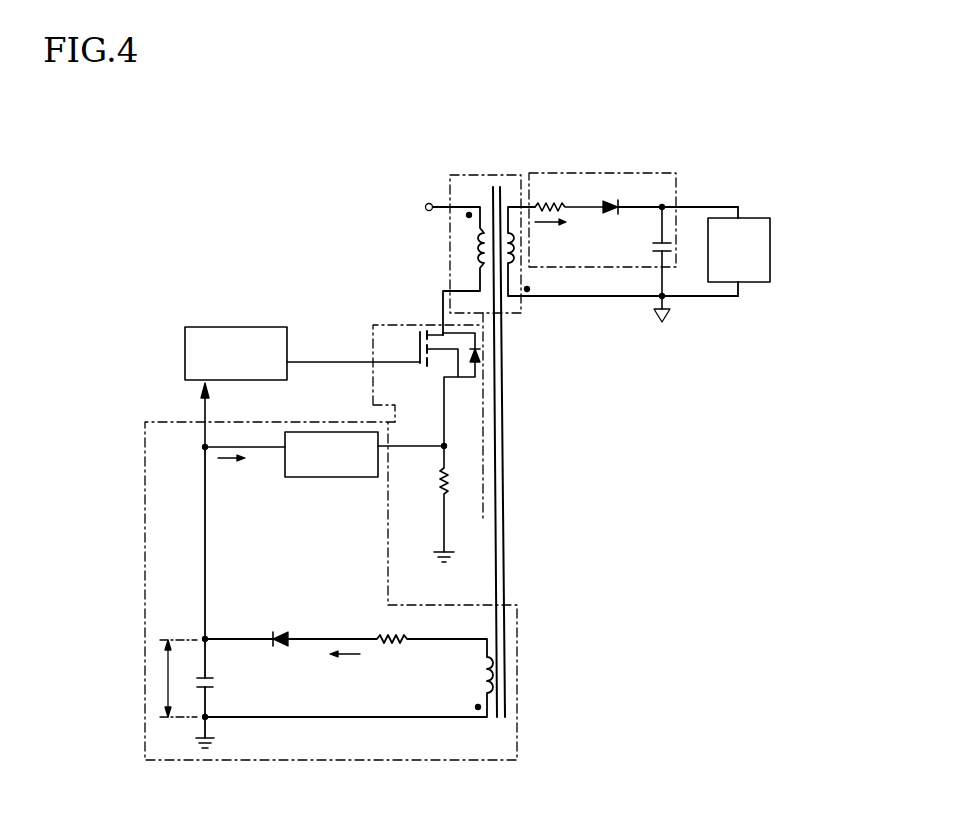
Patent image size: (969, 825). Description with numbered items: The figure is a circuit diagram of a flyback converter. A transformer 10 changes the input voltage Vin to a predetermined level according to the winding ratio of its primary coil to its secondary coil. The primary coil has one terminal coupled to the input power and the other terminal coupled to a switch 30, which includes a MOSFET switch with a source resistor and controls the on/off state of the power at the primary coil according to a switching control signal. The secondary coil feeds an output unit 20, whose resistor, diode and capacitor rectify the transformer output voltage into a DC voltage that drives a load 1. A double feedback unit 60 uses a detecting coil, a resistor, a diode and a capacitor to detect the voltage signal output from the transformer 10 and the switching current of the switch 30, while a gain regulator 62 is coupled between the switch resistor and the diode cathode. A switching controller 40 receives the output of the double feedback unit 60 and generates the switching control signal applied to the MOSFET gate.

The load 1 is at (765, 215).
The transformer 10 is at (467, 172).
The output unit 20 is at (597, 172).
The switch 30 is at (387, 323).
The switching controller 40 is at (197, 325).
The double feedback unit 60 is at (517, 623).
The gain regulator 62 is at (303, 478).